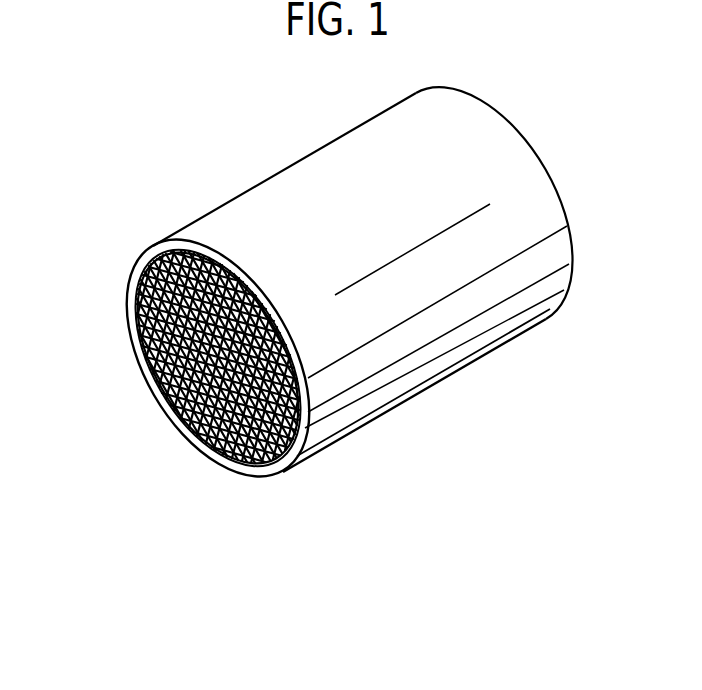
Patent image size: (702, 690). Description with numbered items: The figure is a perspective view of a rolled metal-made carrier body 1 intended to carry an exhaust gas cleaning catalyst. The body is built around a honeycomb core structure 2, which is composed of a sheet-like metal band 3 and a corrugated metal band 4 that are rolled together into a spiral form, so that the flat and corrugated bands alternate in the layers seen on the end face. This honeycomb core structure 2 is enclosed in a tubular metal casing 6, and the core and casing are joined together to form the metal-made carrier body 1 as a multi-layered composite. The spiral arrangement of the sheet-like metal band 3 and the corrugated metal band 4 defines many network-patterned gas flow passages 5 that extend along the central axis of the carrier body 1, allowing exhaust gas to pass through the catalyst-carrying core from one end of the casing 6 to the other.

The metal-made carrier body 1 is at (541, 115).
The honeycomb core structure 2 is at (160, 333).
The sheet-like metal band 3 is at (167, 393).
The corrugated metal band 4 is at (208, 443).
The gas flow passages 5 is at (227, 457).
The tubular metal casing 6 is at (472, 333).